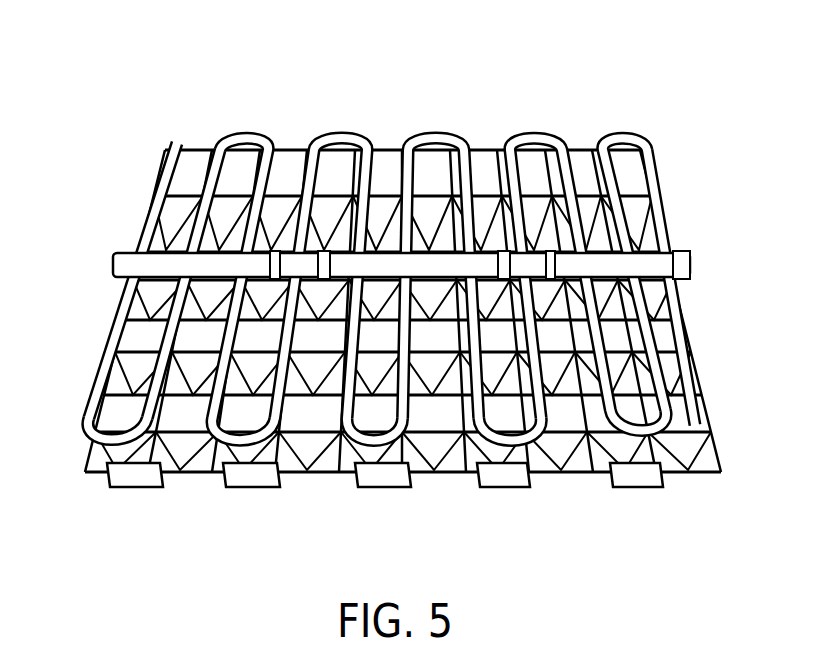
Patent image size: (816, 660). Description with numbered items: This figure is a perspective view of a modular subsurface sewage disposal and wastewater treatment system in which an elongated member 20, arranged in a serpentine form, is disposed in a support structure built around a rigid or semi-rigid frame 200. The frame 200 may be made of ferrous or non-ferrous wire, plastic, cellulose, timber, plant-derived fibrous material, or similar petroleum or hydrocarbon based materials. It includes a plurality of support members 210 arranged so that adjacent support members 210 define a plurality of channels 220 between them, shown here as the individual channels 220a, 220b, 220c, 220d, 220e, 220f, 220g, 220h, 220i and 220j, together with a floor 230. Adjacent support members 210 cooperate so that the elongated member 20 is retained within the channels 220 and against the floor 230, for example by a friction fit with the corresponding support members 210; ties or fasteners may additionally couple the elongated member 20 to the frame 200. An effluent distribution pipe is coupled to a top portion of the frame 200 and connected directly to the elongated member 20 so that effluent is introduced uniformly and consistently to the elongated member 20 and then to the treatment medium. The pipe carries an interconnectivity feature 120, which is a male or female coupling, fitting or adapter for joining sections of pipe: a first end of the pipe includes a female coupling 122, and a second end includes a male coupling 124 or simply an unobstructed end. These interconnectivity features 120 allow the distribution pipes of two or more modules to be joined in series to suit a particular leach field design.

The elongated member 20 is at (415, 284).
The interconnectivity feature 120 is at (683, 253).
The female coupling 122 is at (690, 265).
The male coupling 124 is at (78, 243).
The frame 200 is at (697, 372).
The support members 210 is at (673, 472).
The channels 220 is at (175, 492).
The channel 220a is at (175, 134).
The channel 220b is at (218, 133).
The channel 220c is at (265, 133).
The channel 220d is at (308, 133).
The channel 220e is at (366, 133).
The channel 220f is at (405, 133).
The channel 220g is at (462, 133).
The channel 220h is at (508, 133).
The channel 220i is at (560, 133).
The channel 220j is at (598, 133).
The floor 230 is at (630, 198).